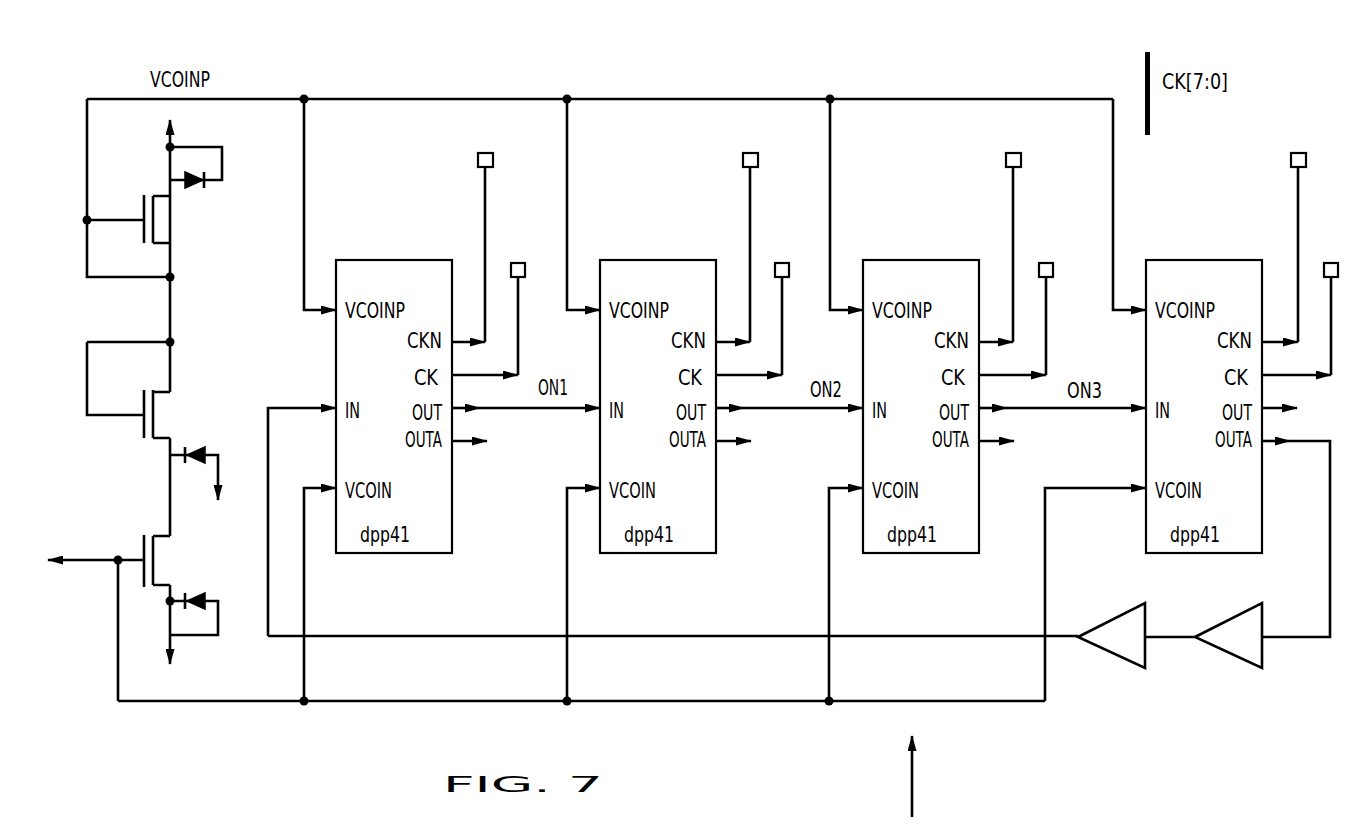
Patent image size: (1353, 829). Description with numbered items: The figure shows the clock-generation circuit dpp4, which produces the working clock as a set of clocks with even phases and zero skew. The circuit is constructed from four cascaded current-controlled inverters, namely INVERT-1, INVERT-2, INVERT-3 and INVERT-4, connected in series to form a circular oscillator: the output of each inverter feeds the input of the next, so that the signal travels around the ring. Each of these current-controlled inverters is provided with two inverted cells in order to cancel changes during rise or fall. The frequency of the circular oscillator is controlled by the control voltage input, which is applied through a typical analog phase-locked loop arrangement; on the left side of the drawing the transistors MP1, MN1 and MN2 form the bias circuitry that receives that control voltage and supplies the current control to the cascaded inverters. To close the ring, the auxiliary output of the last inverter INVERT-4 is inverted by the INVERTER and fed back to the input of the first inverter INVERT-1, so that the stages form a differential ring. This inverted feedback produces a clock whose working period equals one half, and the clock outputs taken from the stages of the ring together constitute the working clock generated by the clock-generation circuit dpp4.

The PMOS bias transistor MP1 is at (163, 190).
The NMOS bias transistor MN1 is at (165, 406).
The NMOS input transistor MN2 is at (140, 610).
The first inverter INVERT-1 is at (452, 400).
The current-controlled inverter INVERT-2 is at (715, 400).
The current-controlled inverter INVERT-3 is at (987, 400).
The last inverter INVERT-4 is at (1196, 400).
The inverter INVERTER is at (1227, 655).
The clock-generation circuit dpp4 is at (862, 776).